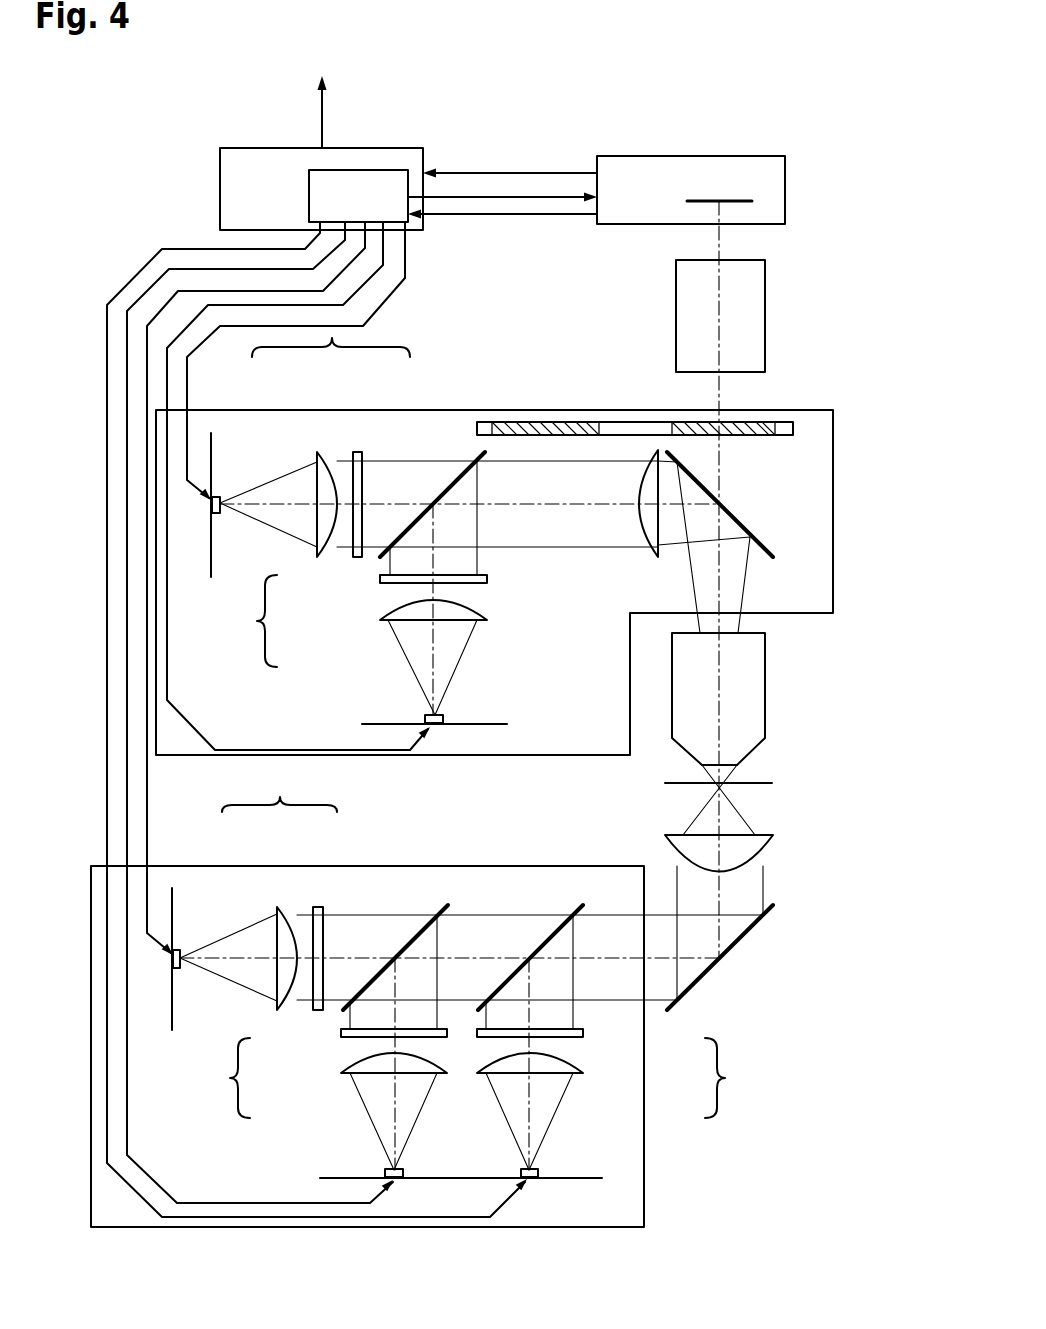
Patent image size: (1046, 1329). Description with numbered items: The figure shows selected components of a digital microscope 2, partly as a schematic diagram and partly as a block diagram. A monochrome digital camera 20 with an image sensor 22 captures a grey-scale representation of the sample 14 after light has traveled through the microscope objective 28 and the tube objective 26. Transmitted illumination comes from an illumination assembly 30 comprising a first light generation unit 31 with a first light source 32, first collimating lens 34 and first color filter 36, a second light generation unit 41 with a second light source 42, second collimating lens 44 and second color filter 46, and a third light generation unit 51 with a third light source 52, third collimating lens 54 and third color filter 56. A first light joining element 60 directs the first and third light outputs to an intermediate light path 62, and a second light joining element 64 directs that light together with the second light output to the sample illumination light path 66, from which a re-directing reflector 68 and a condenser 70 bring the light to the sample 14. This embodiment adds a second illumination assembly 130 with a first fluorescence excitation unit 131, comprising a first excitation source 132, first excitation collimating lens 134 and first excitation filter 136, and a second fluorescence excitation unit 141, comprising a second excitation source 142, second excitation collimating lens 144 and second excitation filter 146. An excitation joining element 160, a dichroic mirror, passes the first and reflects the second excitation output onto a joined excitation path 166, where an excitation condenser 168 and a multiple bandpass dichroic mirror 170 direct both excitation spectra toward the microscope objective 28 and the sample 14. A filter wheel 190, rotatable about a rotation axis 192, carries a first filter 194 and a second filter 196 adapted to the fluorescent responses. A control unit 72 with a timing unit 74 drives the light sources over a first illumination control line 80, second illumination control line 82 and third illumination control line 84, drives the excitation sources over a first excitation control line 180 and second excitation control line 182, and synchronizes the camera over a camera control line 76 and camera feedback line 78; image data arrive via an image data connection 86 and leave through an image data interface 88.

The digital microscope 2 is at (778, 117).
The sample 14 is at (775, 787).
The monochrome digital camera 20 is at (777, 177).
The image sensor 22 is at (700, 200).
The tube objective 26 is at (745, 292).
The microscope objective 28 is at (754, 700).
The illumination assembly 30 is at (185, 870).
The first light generation unit 31 is at (279, 789).
The first light source 32 is at (181, 952).
The first collimating lens 34 is at (280, 905).
The first color filter 36 is at (318, 905).
The second light generation unit 41 is at (734, 1078).
The second light source 42 is at (540, 1172).
The second collimating lens 44 is at (583, 1068).
The second color filter 46 is at (583, 1033).
The third light generation unit 51 is at (223, 1078).
The third light source 52 is at (385, 1172).
The third collimating lens 54 is at (345, 1068).
The third color filter 56 is at (341, 1033).
The first light joining element 60 is at (403, 948).
The intermediate light path 62 is at (483, 912).
The second light joining element 64 is at (536, 952).
The sample illumination light path 66 is at (620, 955).
The re-directing reflector 68 is at (745, 933).
The condenser 70 is at (765, 848).
The control unit 72 is at (402, 160).
The timing unit 74 is at (357, 182).
The camera control line 76 is at (519, 196).
The camera feedback line 78 is at (482, 213).
The first illumination control line 80 is at (148, 731).
The second illumination control line 82 is at (107, 640).
The third illumination control line 84 is at (127, 685).
The image data connection 86 is at (562, 172).
The image data interface 88 is at (320, 105).
The second illumination assembly 130 is at (220, 420).
The first fluorescence excitation unit 131 is at (332, 338).
The first excitation source 132 is at (221, 498).
The first excitation collimating lens 134 is at (320, 450).
The first excitation filter 136 is at (357, 452).
The second fluorescence excitation unit 141 is at (244, 621).
The second excitation source 142 is at (428, 720).
The second excitation collimating lens 144 is at (390, 612).
The second excitation filter 146 is at (385, 580).
The excitation joining element 160 is at (444, 494).
The joined excitation path 166 is at (518, 505).
The excitation condenser 168 is at (650, 527).
The multiple bandpass dichroic mirror 170 is at (743, 516).
The first excitation control line 180 is at (406, 283).
The second excitation control line 182 is at (385, 247).
The filter wheel 190 is at (686, 390).
The rotation axis 192 is at (633, 453).
The first filter 194 is at (742, 420).
The second filter 196 is at (548, 422).